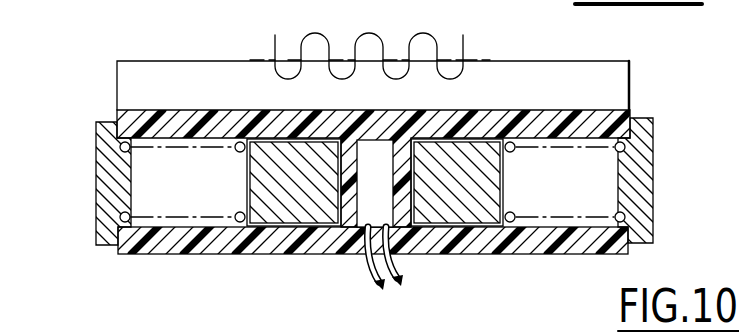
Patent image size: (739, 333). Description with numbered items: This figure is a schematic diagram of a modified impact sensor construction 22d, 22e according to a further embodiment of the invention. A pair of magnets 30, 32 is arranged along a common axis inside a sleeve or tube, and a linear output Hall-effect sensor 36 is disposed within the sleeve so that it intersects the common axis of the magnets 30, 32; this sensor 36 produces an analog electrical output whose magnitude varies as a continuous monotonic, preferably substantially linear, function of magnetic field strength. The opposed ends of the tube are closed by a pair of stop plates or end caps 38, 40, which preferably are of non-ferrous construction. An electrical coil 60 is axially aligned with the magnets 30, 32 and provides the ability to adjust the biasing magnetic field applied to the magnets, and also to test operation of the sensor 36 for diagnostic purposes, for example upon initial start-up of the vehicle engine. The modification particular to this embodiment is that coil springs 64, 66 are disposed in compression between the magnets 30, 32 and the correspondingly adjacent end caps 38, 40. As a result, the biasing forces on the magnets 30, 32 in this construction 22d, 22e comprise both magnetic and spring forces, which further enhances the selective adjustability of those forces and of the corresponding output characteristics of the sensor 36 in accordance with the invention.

The modified impact sensor construction 22d is at (155, 108).
The modified impact sensor construction 22e is at (426, 331).
The magnet 30 is at (262, 182).
The magnet 32 is at (490, 187).
The linear output Hall-effect sensor 36 is at (367, 157).
The stop plate 38 is at (103, 180).
The stop plate 40 is at (650, 162).
The electrical coil 60 is at (366, 34).
The coil spring 64 is at (163, 220).
The coil spring 66 is at (505, 250).